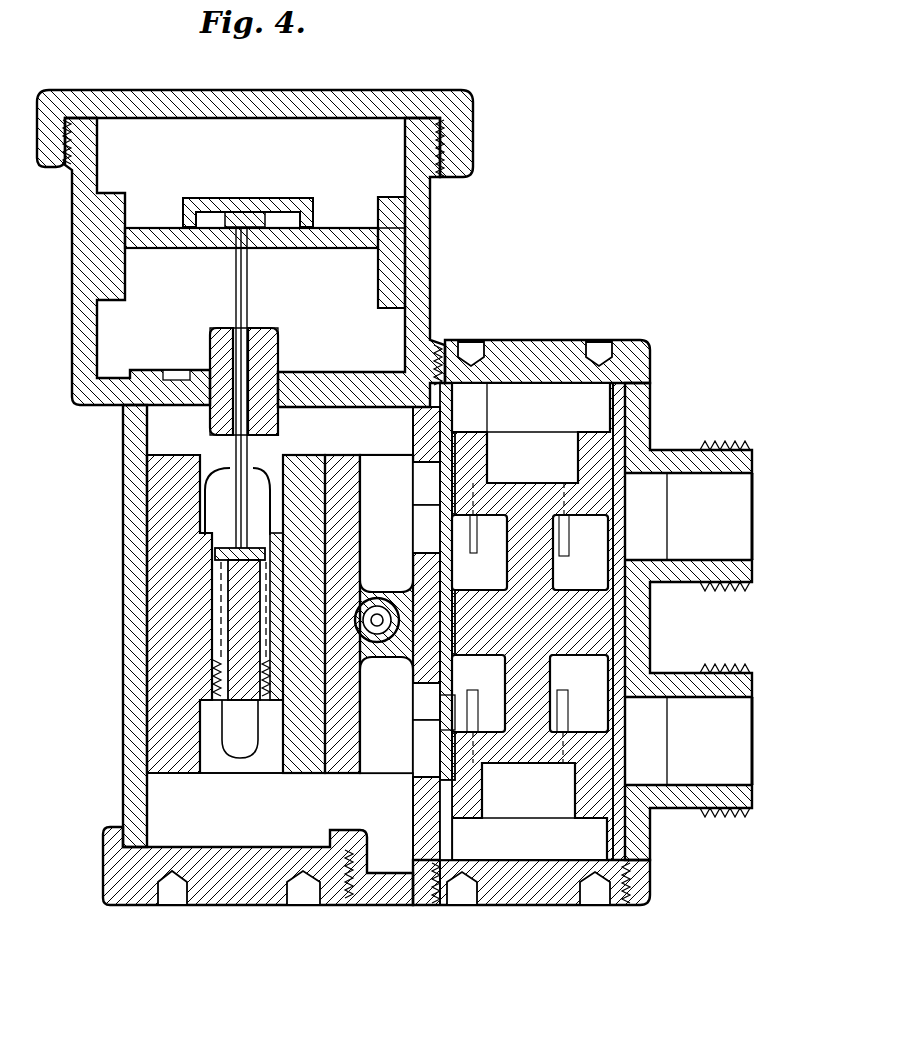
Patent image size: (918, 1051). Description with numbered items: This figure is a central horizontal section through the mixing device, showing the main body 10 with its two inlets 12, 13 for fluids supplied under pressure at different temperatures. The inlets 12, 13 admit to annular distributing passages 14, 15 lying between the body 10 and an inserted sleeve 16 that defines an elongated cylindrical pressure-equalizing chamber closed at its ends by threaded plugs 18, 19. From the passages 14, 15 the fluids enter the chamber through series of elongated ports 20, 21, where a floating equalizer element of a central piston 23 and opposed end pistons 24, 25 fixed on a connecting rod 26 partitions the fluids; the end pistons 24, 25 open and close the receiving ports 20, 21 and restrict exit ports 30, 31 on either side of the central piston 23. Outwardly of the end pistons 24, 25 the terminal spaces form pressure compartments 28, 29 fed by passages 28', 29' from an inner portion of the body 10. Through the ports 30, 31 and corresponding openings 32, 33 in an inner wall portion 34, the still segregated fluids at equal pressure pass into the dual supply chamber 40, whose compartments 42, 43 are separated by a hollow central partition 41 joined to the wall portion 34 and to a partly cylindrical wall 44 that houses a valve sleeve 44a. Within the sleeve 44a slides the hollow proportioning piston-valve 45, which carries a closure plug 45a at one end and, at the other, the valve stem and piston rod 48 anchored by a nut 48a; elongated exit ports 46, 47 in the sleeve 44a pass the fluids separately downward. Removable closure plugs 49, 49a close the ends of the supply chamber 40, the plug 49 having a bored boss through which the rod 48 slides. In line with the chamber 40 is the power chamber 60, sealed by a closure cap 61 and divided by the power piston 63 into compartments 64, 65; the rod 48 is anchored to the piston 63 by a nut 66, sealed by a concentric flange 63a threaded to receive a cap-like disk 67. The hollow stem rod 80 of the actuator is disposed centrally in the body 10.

The main body 10 is at (112, 471).
The inlet 12 is at (756, 487).
The inlet 13 is at (756, 719).
The annular distributing passage 14 is at (661, 490).
The annular distributing passage 15 is at (663, 729).
The sleeve 16 is at (614, 608).
The threaded plug 18 is at (540, 343).
The threaded plug 19 is at (515, 896).
The elongated port 20 is at (475, 550).
The elongated port 21 is at (476, 696).
The central piston 23 is at (575, 590).
The end piston 24 is at (517, 481).
The end piston 25 is at (522, 764).
The connecting rod 26 is at (552, 674).
The pressure compartment 28 is at (531, 433).
The passage 28' is at (478, 407).
The pressure compartment 29 is at (529, 839).
The passage 29' is at (467, 820).
The exit port 30 is at (447, 520).
The exit port 31 is at (447, 712).
The opening 32 is at (426, 487).
The opening 33 is at (425, 745).
The inner wall portion 34 is at (422, 682).
The dual supply chamber 40 is at (123, 597).
The hollow central partition 41 is at (380, 597).
The compartment 42 is at (280, 430).
The compartment 43 is at (280, 823).
The partly cylindrical wall 44 is at (368, 782).
The valve sleeve 44a is at (180, 774).
The proportioning piston-valve 45 is at (270, 486).
The closure plug 45a is at (245, 701).
The exit port 46 is at (222, 478).
The exit port 47 is at (242, 762).
The valve stem and piston rod 48 is at (250, 270).
The anchor nut 48a is at (215, 555).
The closure plug 49 is at (208, 373).
The closure plug 49a is at (235, 895).
The power chamber 60 is at (73, 250).
The closure cap 61 is at (340, 91).
The power piston 63 is at (178, 249).
The concentric flange 63a is at (308, 220).
The compartment 64 is at (251, 173).
The compartment 65 is at (251, 313).
The nut 66 is at (283, 211).
The cap-like disk 67 is at (216, 199).
The hollow stem rod 80 is at (380, 645).